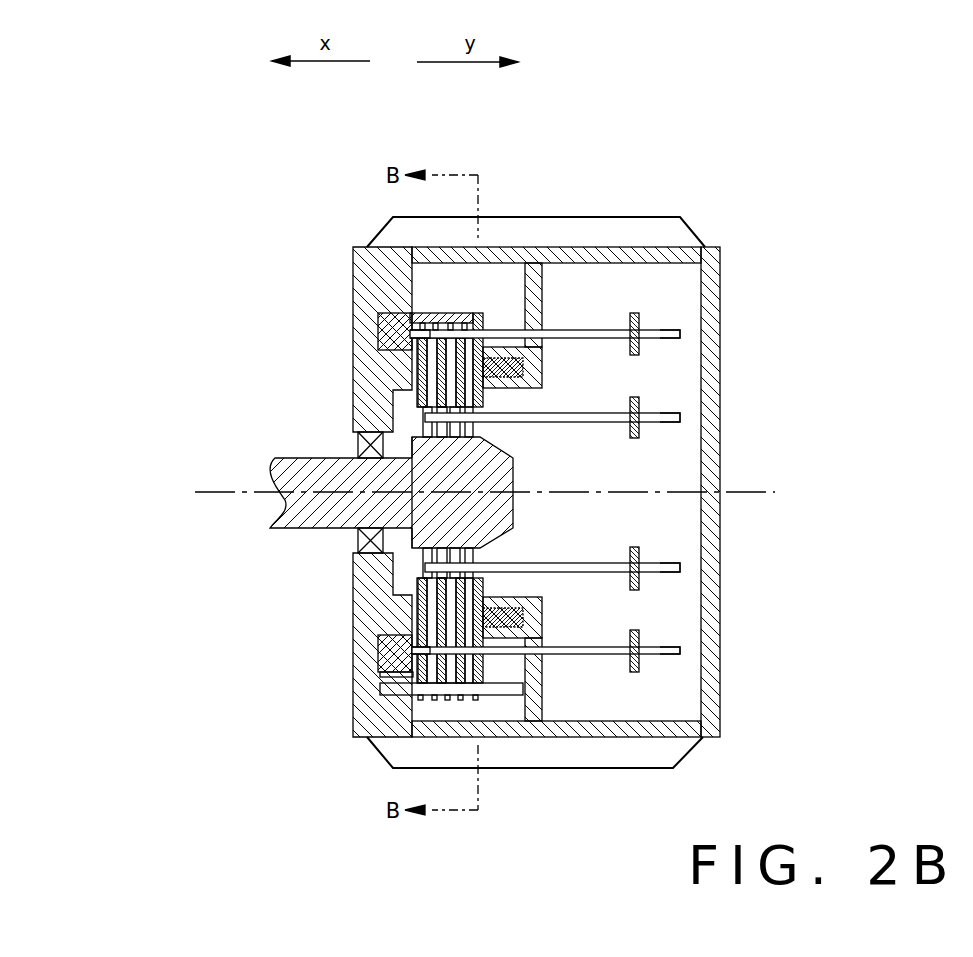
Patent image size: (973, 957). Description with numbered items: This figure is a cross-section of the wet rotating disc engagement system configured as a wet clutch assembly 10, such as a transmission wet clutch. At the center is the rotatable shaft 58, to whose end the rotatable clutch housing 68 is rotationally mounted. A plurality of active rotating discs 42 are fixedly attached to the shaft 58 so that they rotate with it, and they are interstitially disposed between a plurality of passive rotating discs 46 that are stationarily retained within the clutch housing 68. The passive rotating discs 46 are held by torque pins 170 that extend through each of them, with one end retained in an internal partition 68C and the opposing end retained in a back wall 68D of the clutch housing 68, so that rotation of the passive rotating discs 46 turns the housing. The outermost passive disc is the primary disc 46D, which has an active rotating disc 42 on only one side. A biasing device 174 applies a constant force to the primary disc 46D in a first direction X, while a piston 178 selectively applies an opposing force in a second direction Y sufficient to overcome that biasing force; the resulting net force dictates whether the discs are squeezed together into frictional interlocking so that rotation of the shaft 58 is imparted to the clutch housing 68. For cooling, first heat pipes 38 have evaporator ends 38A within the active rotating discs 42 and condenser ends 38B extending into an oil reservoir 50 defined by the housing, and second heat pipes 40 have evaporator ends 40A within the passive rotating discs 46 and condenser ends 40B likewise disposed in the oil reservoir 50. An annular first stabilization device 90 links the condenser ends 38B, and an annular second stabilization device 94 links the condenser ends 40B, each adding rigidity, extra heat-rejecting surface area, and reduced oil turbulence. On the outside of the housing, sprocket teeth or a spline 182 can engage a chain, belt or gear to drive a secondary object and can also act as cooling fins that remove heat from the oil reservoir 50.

The wet clutch assembly 10 is at (601, 150).
The first heat pipes 38 is at (574, 414).
The evaporator ends 38A is at (412, 440).
The condenser ends 38B is at (672, 414).
The second heat pipes 40 is at (602, 332).
The evaporator ends 40A is at (418, 350).
The condenser ends 40B is at (668, 336).
The active rotating discs 42 is at (462, 400).
The passive rotating discs 46 is at (462, 323).
The primary disc 46D is at (480, 313).
The oil reservoir 50 is at (688, 286).
The rotatable shaft 58 is at (318, 470).
The clutch housing 68 is at (662, 256).
The internal partition 68C is at (543, 620).
The back wall 68D is at (355, 665).
The first heat pipe condenser end stabilization device 90 is at (634, 440).
The second heat pipe condenser end stabilization device 94 is at (640, 320).
The torque pins 170 is at (507, 692).
The biasing device 174 is at (535, 300).
The piston 178 is at (392, 325).
The sprocket teeth or spline 182 is at (537, 240).